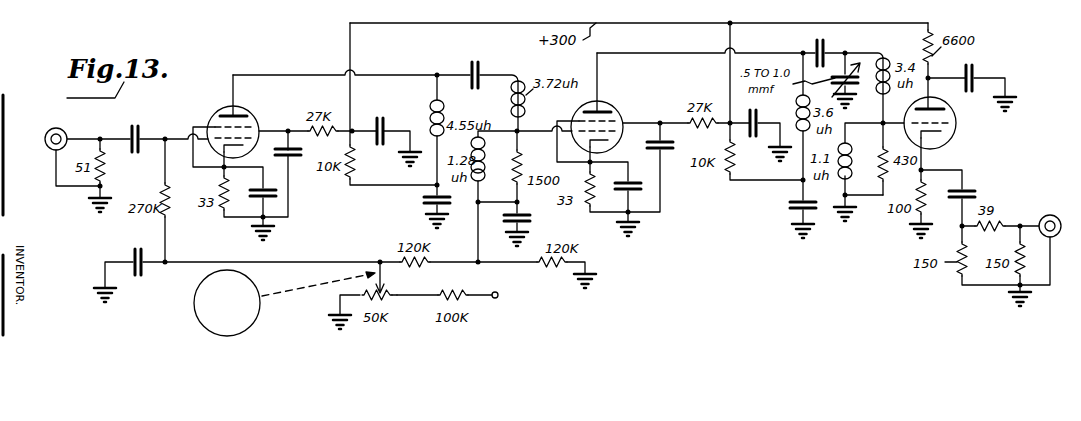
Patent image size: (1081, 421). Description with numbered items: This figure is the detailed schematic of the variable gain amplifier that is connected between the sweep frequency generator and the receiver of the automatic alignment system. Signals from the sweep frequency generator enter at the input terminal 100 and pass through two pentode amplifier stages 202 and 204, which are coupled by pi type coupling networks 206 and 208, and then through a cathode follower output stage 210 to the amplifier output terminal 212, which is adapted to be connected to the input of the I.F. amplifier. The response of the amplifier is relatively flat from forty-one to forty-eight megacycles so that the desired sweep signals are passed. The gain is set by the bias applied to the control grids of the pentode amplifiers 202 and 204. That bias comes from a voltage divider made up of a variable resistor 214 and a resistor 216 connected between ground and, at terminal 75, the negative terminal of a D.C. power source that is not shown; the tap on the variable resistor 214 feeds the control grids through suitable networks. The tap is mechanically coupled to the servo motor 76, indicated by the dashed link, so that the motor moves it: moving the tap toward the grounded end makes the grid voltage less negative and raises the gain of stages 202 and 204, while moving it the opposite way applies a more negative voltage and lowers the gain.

The input terminal 100 is at (66, 131).
The pentode amplifier 202 is at (284, 103).
The pentode amplifier 204 is at (660, 96).
The pi type coupling network 206 is at (488, 111).
The pi type coupling network 208 is at (878, 43).
The cathode follower output stage 210 is at (998, 148).
The amplifier output terminal 212 is at (1042, 213).
The variable resistor 214 is at (398, 296).
The resistor 216 is at (451, 293).
The servo motor 76 is at (194, 309).
The terminal 75 is at (498, 294).